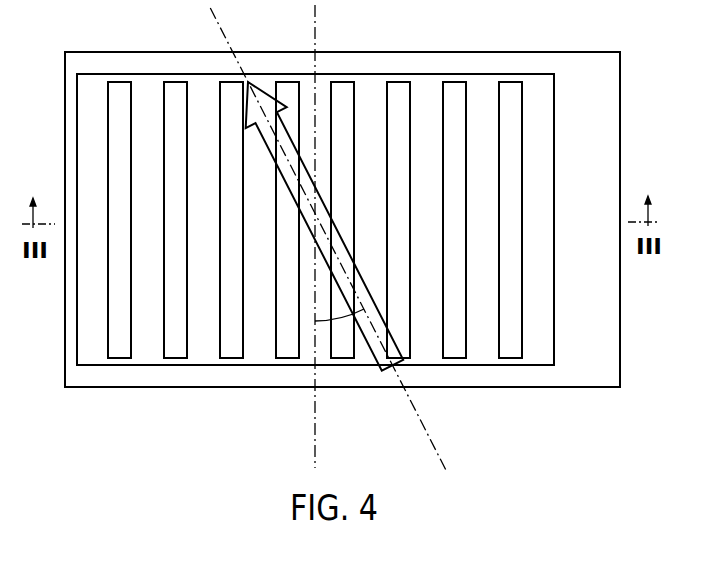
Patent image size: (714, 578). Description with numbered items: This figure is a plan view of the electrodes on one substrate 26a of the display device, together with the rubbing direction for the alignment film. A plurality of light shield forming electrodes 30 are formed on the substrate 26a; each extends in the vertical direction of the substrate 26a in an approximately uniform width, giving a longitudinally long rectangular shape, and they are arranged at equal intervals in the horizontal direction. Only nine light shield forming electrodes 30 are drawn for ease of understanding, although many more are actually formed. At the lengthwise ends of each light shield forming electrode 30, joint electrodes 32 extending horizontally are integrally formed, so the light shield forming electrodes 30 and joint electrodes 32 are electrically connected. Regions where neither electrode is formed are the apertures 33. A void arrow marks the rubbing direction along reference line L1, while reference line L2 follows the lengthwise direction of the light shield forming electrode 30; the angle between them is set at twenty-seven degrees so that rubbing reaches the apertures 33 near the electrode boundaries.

The substrate 26a is at (587, 68).
The light shield forming electrode 30 is at (204, 102).
The joint electrode 32 is at (456, 79).
The aperture 33 is at (110, 98).
The reference line L1 is at (434, 437).
The reference line L2 is at (318, 432).